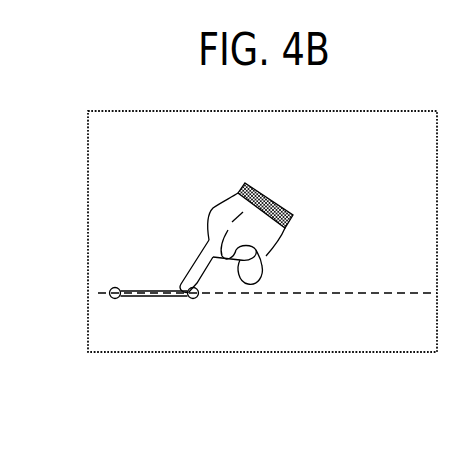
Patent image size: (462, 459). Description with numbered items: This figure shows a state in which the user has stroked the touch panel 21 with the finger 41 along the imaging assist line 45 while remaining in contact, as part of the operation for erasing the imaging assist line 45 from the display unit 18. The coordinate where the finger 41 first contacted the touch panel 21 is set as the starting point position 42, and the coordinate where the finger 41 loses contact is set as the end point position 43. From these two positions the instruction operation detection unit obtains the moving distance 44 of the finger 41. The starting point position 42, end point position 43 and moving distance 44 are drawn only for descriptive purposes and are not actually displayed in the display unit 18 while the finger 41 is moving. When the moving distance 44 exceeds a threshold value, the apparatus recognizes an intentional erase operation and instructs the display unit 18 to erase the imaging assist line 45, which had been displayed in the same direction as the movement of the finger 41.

The display unit 18 is at (377, 111).
The touch panel 21 is at (262, 231).
The finger 41 is at (216, 207).
The starting point position 42 is at (118, 299).
The end point position 43 is at (195, 300).
The moving distance 44 is at (152, 297).
The imaging assist line 45 is at (362, 293).